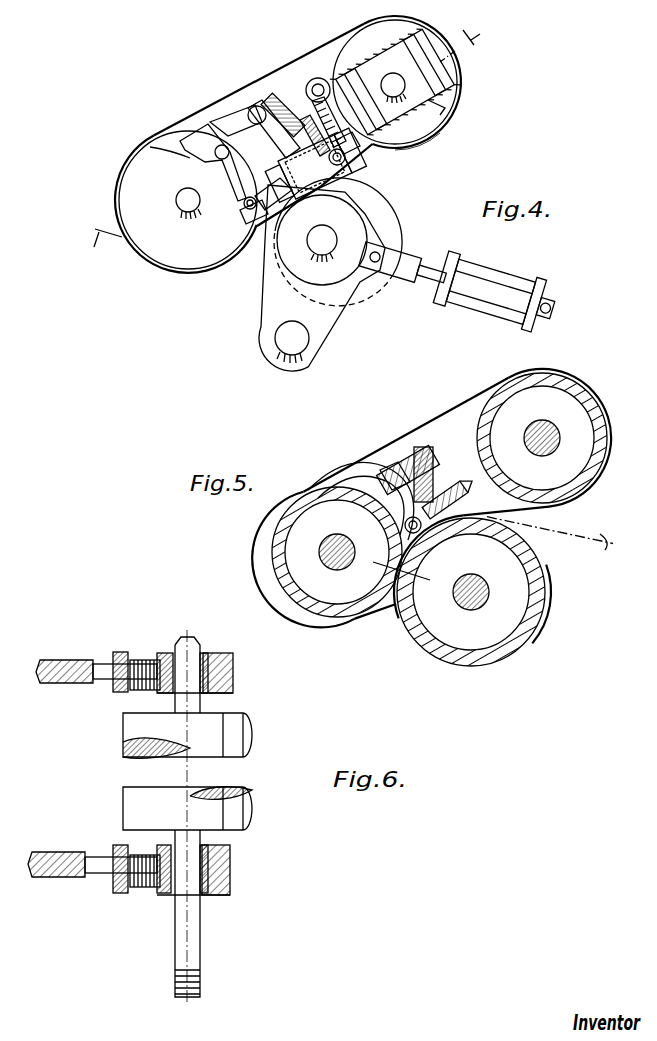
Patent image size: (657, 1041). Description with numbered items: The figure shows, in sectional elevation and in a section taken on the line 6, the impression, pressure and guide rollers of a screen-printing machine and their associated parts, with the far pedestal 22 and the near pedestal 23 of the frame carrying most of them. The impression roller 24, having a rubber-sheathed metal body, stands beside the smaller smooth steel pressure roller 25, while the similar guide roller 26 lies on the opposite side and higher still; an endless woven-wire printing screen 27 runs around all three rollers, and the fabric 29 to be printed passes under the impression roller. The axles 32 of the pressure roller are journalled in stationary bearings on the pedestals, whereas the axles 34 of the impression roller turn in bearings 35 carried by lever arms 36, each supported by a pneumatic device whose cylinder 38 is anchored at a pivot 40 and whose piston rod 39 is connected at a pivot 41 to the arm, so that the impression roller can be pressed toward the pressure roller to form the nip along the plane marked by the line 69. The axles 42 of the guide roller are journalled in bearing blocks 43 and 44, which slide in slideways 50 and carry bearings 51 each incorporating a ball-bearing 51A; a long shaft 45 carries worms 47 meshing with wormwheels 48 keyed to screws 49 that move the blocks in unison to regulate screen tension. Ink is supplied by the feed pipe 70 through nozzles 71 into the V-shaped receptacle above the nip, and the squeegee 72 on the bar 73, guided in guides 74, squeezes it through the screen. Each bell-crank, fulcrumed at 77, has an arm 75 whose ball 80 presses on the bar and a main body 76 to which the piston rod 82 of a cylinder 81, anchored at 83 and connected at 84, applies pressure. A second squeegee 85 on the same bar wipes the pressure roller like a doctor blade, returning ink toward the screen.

In FIG. 4, the section line 6— 6 is at (282, 126).
In FIG. 6, the upper pedestal 22 is at (70, 878).
In FIG. 6, the upper pedestal 23 is at (45, 660).
In FIG. 4, the impression roller 24 is at (400, 250).
In FIG. 5, the impression roller 24 is at (423, 638).
In FIG. 4, the pressure roller 25 is at (150, 148).
In FIG. 5, the pressure roller 25 is at (348, 608).
In FIG. 4, the guide roller 26 is at (437, 113).
In FIG. 5, the guide roller 26 is at (488, 406).
In FIG. 6, the guide roller 26 is at (125, 800).
In FIG. 4, the endless printing screen 27 is at (440, 133).
In FIG. 5, the endless printing screen 27 is at (396, 470).
In FIG. 5, the fabric 29 is at (550, 531).
In FIG. 4, the axle of the pressure roller 32 is at (175, 197).
In FIG. 5, the axle of the pressure roller 32 is at (336, 566).
In FIG. 4, the axle of the impression roller 34 is at (324, 240).
In FIG. 5, the axle of the impression roller 34 is at (462, 610).
In FIG. 4, the bearing 35 is at (372, 268).
In FIG. 4, the lever arm 36 is at (330, 302).
In FIG. 4, the cylinder 38 is at (467, 292).
In FIG. 4, the piston rod 39 is at (418, 278).
In FIG. 4, the pivotal anchorage 40 is at (550, 306).
In FIG. 4, the pivotal connection 41 is at (369, 257).
In FIG. 4, the axle of the guide roller 42 is at (405, 86).
In FIG. 5, the axle of the guide roller 42 is at (528, 432).
In FIG. 6, the axle of the guide roller 42 is at (181, 650).
In FIG. 4, the bearing block 43 is at (418, 100).
In FIG. 6, the bearing block 43 is at (226, 880).
In FIG. 6, the bearing block 44 is at (233, 670).
In FIG. 4, the long shaft 45 is at (318, 78).
In FIG. 4, the worm 47 is at (332, 120).
In FIG. 4, the wormwheel 48 is at (348, 155).
In FIG. 6, the wormwheel 48 is at (118, 656).
In FIG. 4, the screw 49 is at (312, 140).
In FIG. 6, the screw 49 is at (139, 660).
In FIG. 4, the slideway 50 is at (441, 108).
In FIG. 6, the bearing 51 is at (165, 653).
In FIG. 6, the ball-bearing 51A is at (208, 655).
In FIG. 5, the nip plane line 69 is at (400, 578).
In FIG. 5, the feed pipe 70 is at (406, 518).
In FIG. 5, the nozzle 71 is at (320, 488).
In FIG. 4, the squeegee 72 is at (282, 106).
In FIG. 5, the squeegee 72 is at (446, 478).
In FIG. 4, the bar 73 is at (266, 126).
In FIG. 5, the bar 73 is at (420, 466).
In FIG. 4, the guide 74 is at (250, 218).
In FIG. 4, the bell-crank arm 75 is at (247, 116).
In FIG. 4, the bell-crank main body 76 is at (185, 156).
In FIG. 4, the fulcrum 77 is at (200, 132).
In FIG. 4, the ball 80 is at (237, 120).
In FIG. 4, the cylinder 81 is at (358, 198).
In FIG. 4, the piston rod 82 is at (258, 212).
In FIG. 4, the pivotal anchorage 83 is at (352, 175).
In FIG. 4, the pivotal connection 84 is at (235, 230).
In FIG. 5, the second squeegee 85 is at (392, 488).